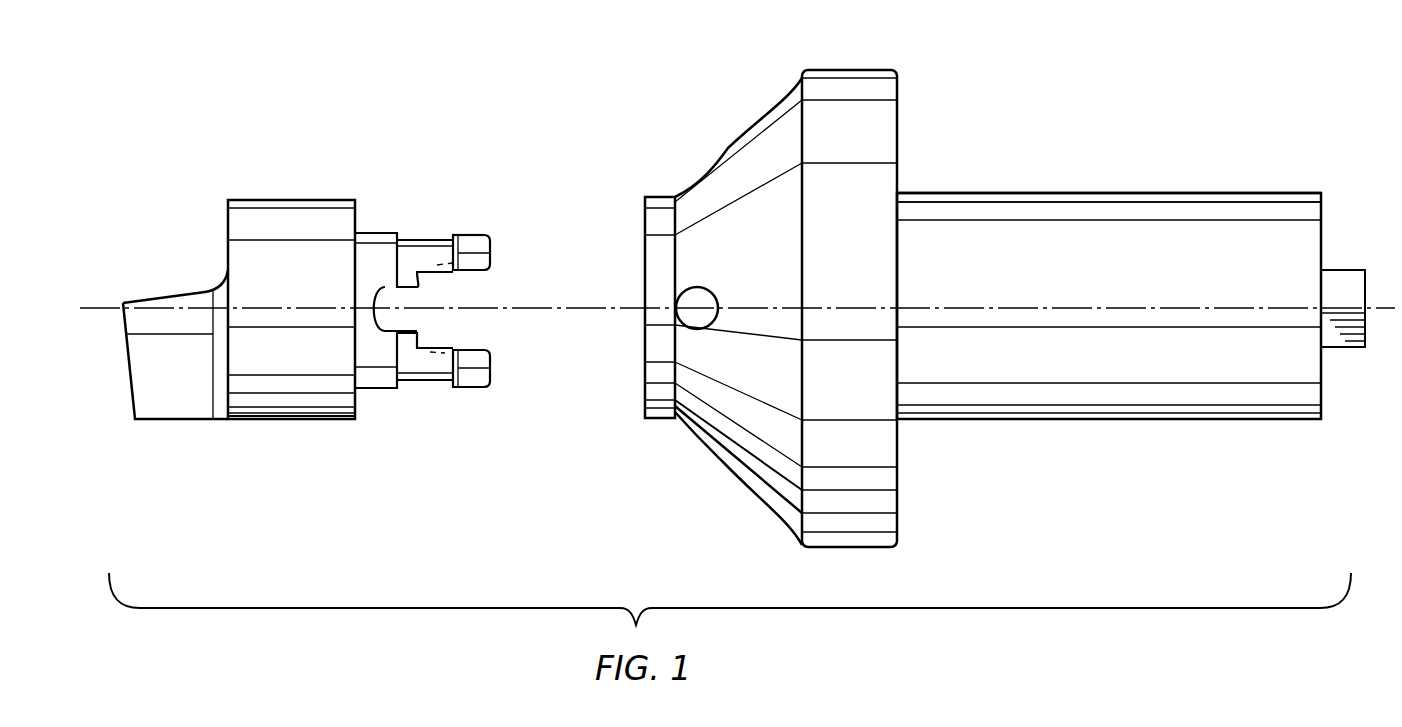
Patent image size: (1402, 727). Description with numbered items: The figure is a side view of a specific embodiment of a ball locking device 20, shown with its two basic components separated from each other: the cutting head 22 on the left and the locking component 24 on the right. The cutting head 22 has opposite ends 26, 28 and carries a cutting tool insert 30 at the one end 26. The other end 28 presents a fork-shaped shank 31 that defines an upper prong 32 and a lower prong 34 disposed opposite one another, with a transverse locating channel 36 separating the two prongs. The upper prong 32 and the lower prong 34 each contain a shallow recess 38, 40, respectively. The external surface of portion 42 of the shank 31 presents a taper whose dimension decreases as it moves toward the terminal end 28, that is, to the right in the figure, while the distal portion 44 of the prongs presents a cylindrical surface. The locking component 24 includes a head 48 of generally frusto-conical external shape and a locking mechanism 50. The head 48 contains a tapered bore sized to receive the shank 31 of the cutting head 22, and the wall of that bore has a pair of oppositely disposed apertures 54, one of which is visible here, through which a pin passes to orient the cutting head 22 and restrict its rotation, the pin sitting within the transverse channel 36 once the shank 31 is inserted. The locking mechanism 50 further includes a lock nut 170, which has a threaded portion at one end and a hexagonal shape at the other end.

The ball locking device 20 is at (632, 64).
The cutting head 22 is at (273, 417).
The locking component 24 is at (1193, 419).
The end of cutting head 26 is at (125, 393).
The opposite end of cutting head 28 is at (492, 378).
The cutting tool insert 30 is at (155, 303).
The fork-shaped shank 31 is at (425, 240).
The upper prong 32 is at (480, 253).
The lower prong 34 is at (483, 368).
The transverse locating channel 36 is at (383, 388).
The shallow recess 38 is at (463, 272).
The shallow recess 40 is at (463, 353).
The tapered portion of shank 42 is at (382, 233).
The distal portion of prongs 44 is at (477, 237).
The head 48 is at (885, 105).
The locking mechanism 50 is at (1242, 208).
The aperture 54 is at (694, 318).
The lock nut 170 is at (1350, 272).